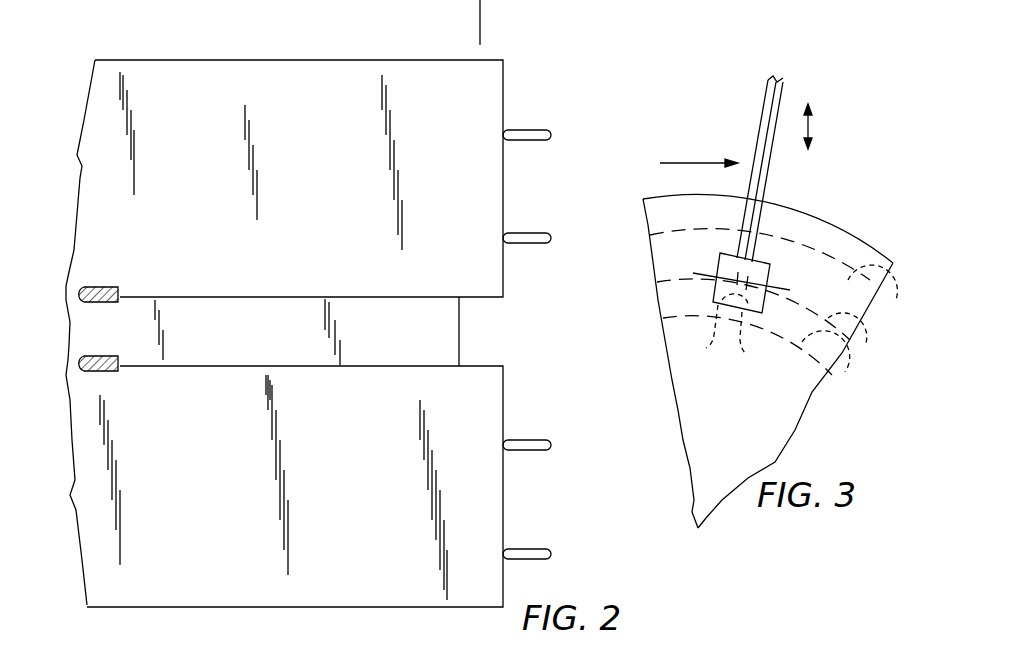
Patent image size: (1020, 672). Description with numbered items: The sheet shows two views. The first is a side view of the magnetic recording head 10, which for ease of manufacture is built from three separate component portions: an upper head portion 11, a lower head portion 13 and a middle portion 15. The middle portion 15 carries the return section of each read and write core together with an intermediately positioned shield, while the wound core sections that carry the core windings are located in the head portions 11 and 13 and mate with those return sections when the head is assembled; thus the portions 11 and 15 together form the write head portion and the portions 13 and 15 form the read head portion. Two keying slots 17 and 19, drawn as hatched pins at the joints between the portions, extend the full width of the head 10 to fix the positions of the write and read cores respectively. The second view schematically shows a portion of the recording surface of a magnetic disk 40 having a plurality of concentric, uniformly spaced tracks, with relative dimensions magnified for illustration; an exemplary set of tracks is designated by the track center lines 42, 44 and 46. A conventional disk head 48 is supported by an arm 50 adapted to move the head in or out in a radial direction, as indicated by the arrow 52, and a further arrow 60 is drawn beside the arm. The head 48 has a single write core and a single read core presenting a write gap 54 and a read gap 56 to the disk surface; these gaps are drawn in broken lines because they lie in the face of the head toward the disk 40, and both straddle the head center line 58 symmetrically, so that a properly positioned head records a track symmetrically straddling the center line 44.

In FIG. 2, the head 10 is at (163, 55).
In FIG. 2, the head portion 11 is at (328, 85).
In FIG. 2, the head portion 13 is at (266, 572).
In FIG. 2, the middle portion 15 is at (100, 326).
In FIG. 2, the keying slot 17 is at (110, 288).
In FIG. 2, the keying slot 19 is at (112, 373).
In FIG. 3, the disk 40 is at (768, 415).
In FIG. 3, the track center line 42 is at (840, 368).
In FIG. 3, the track center line 44 is at (862, 336).
In FIG. 3, the track center line 46 is at (893, 302).
In FIG. 3, the disk head 48 is at (768, 268).
In FIG. 3, the arm 50 is at (770, 113).
In FIG. 3, the arrow 52 is at (812, 126).
In FIG. 3, the write gap 54 is at (708, 345).
In FIG. 3, the read gap 56 is at (740, 346).
In FIG. 3, the head center line 58 is at (700, 272).
In FIG. 3, the feed direction 60 is at (700, 163).